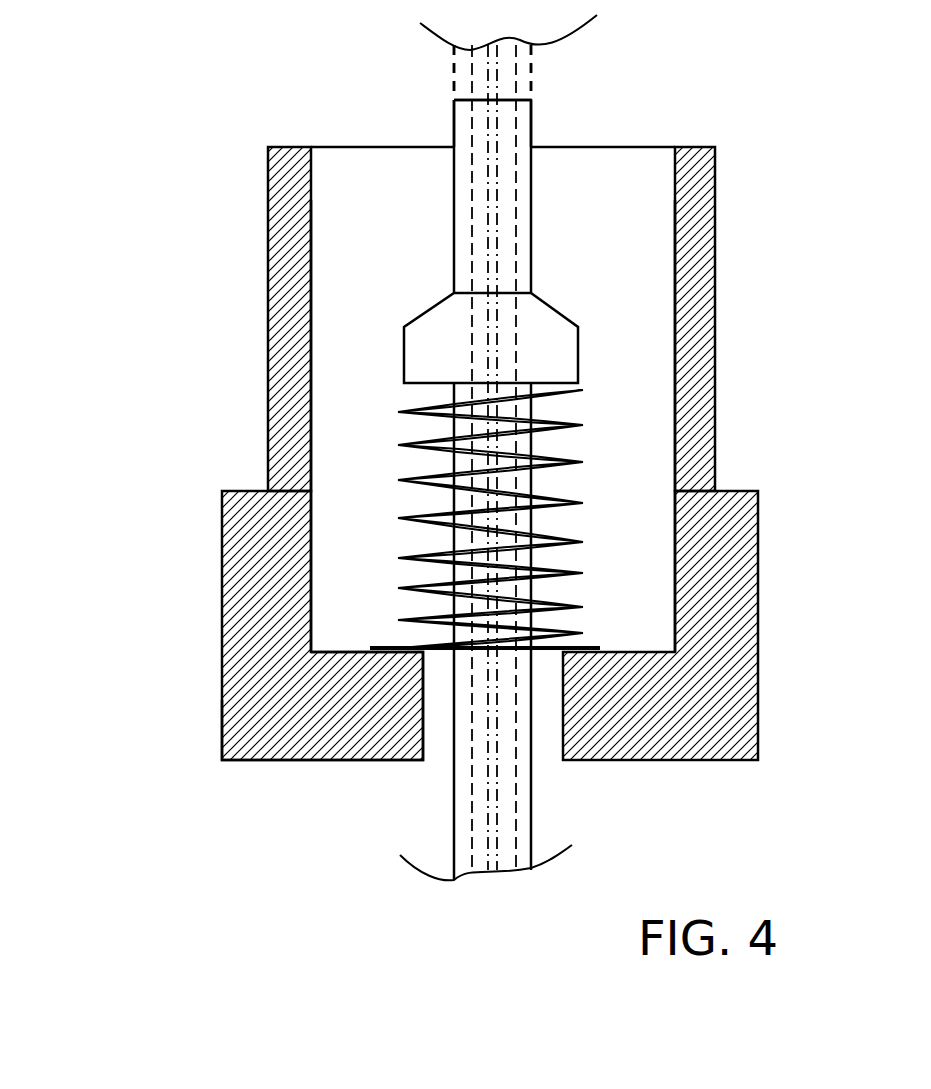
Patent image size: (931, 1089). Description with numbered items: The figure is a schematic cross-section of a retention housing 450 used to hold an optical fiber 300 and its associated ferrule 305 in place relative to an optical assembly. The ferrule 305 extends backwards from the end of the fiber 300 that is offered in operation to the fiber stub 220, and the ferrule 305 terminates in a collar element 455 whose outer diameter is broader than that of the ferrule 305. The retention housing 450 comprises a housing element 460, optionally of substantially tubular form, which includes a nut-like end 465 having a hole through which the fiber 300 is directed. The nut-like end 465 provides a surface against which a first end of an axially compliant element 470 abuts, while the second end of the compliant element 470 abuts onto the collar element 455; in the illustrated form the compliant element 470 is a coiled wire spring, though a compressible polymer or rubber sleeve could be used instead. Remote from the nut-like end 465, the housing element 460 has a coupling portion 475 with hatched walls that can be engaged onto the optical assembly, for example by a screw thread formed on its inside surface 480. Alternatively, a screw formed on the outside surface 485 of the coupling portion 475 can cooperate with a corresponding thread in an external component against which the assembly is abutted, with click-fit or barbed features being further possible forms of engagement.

The fiber stub 220 is at (462, 66).
The fiber 300 is at (505, 133).
The ferrule 305 is at (462, 120).
The retention housing 450 is at (168, 236).
The collar element 455 is at (550, 350).
The housing element 460 is at (216, 557).
The nut-like end 465 is at (283, 727).
The axially compliant element 470 is at (545, 468).
The coupling portion 475 is at (290, 327).
The inside surface 480 is at (311, 277).
The outside surface 485 is at (715, 230).